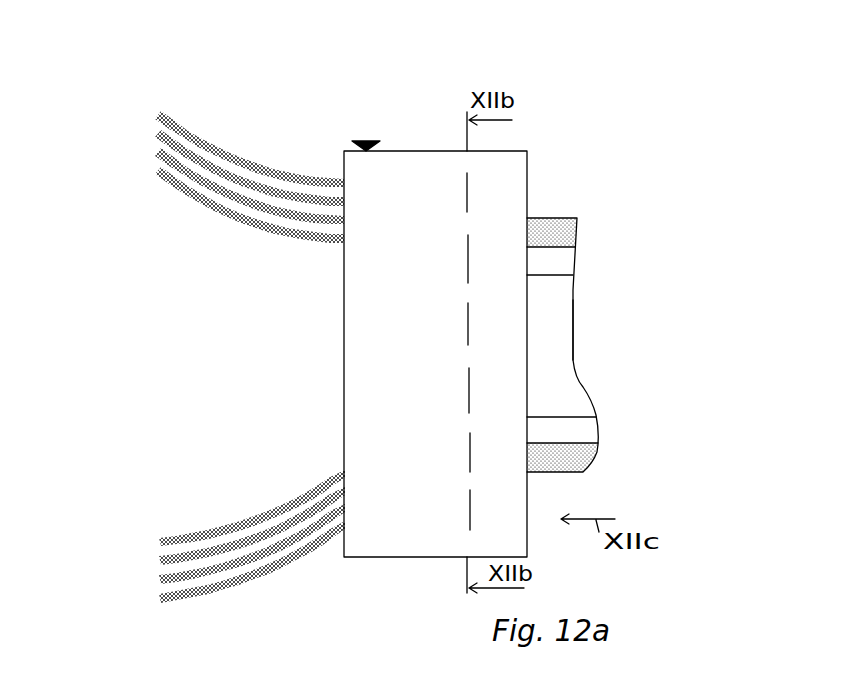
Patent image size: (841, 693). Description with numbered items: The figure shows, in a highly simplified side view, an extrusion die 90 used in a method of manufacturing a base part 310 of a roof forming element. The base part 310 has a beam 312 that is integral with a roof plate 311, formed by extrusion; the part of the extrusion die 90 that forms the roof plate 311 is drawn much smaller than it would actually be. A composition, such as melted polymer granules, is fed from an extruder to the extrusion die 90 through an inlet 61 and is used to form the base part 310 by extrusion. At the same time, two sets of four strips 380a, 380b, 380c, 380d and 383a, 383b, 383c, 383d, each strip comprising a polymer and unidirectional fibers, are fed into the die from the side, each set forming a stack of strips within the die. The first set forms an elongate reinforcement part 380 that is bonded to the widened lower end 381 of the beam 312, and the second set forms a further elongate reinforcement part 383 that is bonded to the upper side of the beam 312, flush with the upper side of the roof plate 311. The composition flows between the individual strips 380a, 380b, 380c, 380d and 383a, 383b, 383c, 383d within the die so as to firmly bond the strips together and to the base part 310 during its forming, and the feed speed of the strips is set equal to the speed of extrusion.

The extrusion die 90 is at (383, 351).
The inlet 61 is at (341, 360).
The base part 310 is at (603, 313).
The roof plate 311 is at (571, 265).
The beam 312 is at (570, 366).
The lower end 381 is at (592, 425).
The elongate reinforcement part 380 is at (585, 460).
The further elongate reinforcement part 383 is at (576, 230).
The strip 383a is at (173, 118).
The strip 383b is at (201, 158).
The strip 383c is at (160, 153).
The strip 383d is at (202, 207).
The strip 380a is at (183, 538).
The strip 380b is at (165, 562).
The strip 380c is at (160, 582).
The strip 380d is at (226, 598).